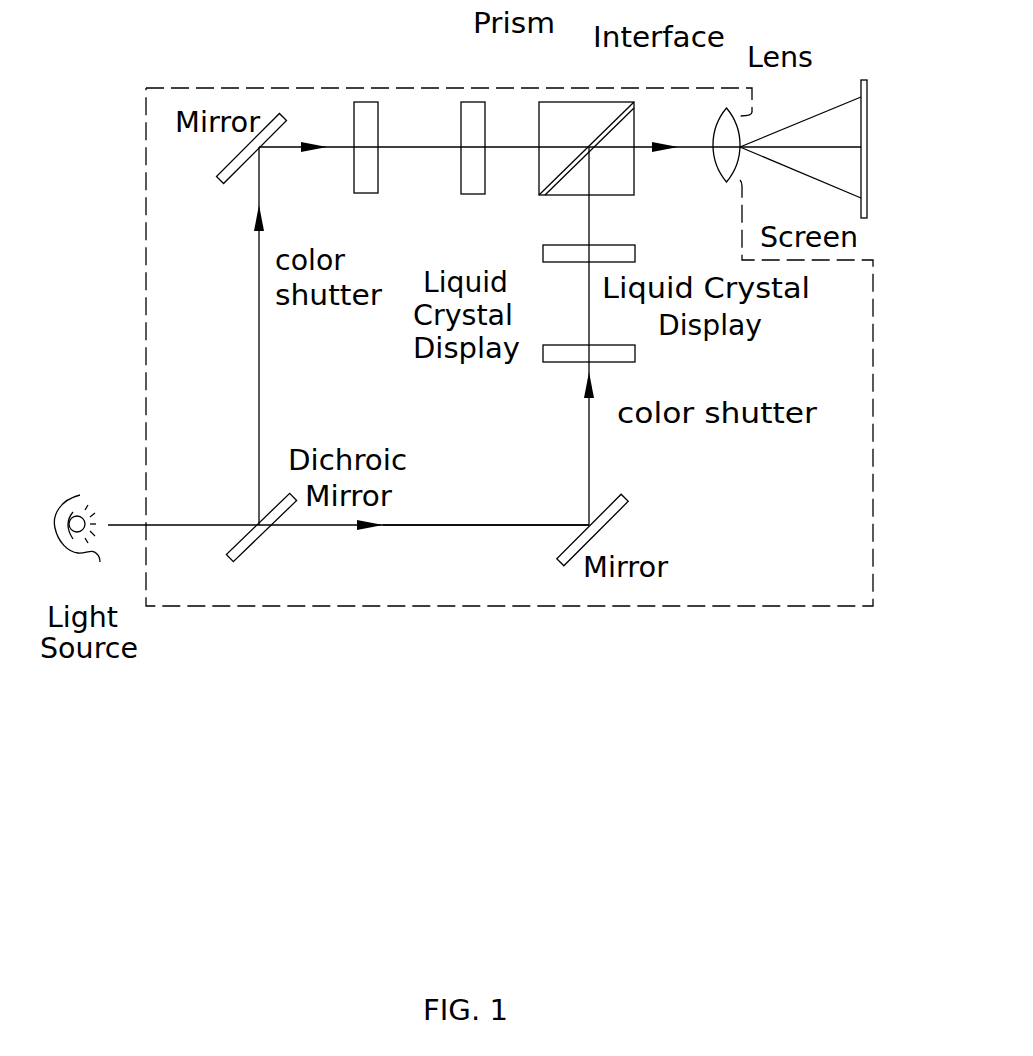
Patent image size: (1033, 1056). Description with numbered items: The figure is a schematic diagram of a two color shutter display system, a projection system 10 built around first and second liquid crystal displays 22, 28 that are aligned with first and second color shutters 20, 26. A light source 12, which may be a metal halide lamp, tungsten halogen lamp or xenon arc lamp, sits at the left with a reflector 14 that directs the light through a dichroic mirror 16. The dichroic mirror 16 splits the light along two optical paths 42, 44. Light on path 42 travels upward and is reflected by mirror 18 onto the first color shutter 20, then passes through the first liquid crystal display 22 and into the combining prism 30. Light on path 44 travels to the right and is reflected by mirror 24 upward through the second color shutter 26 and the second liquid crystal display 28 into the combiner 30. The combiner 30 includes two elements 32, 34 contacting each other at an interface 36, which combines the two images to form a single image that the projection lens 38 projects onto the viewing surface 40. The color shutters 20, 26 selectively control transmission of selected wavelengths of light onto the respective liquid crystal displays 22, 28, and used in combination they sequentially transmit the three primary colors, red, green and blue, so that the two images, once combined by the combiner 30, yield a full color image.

The projection system 10 is at (212, 61).
The light source 12 is at (98, 554).
The reflector 14 is at (67, 500).
The dichroic mirror 16 is at (247, 550).
The mirror 18 is at (228, 167).
The first color shutter 20 is at (367, 193).
The first liquid crystal display 22 is at (470, 194).
The mirror 24 is at (608, 518).
The second color shutter 26 is at (635, 353).
The second liquid crystal display 28 is at (635, 253).
The combining prism 30 is at (587, 115).
The first element 32 is at (583, 137).
The second element 34 is at (627, 187).
The interface 36 is at (632, 103).
The projection lens 38 is at (740, 132).
The viewing surface 40 is at (861, 213).
The first optical path 42 is at (258, 447).
The second optical path 44 is at (408, 525).